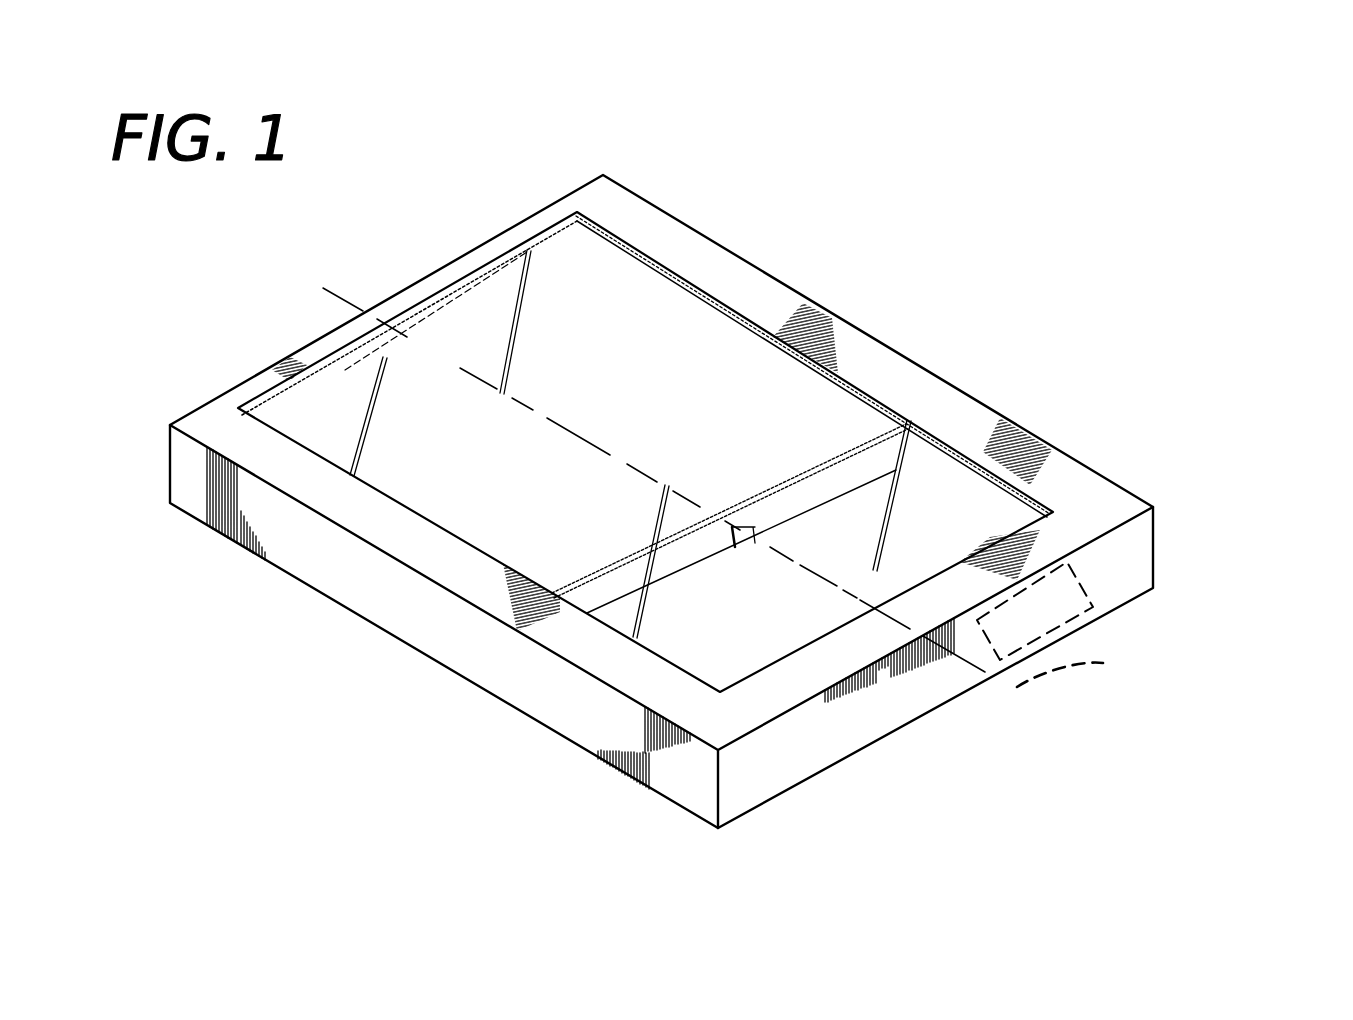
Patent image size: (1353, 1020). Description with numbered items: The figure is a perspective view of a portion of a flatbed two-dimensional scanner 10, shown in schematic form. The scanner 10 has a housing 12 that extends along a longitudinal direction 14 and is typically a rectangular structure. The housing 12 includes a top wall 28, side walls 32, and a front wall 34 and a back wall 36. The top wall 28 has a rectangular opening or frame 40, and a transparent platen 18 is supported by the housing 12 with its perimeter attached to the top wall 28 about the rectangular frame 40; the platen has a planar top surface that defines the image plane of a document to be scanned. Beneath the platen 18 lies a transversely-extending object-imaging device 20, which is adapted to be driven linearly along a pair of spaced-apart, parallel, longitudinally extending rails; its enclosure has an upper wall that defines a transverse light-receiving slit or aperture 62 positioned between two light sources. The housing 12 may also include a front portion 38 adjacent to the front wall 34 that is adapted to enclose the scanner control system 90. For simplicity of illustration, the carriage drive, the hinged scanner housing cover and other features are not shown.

The flatbed two-dimensional scanner 10 is at (1019, 188).
The housing 12 is at (803, 269).
The longitudinal direction 14 is at (1087, 672).
The transparent platen 18 is at (647, 330).
The object-imaging device 20 is at (888, 432).
The top wall 28 is at (413, 550).
The side walls 32 is at (1013, 420).
The front wall 34 is at (817, 745).
The back wall 36 is at (327, 332).
The front portion 38 is at (1070, 532).
The rectangular opening or frame 40 is at (565, 277).
The light-receiving slit or aperture 62 is at (867, 417).
The scanner control system 90 is at (1030, 607).